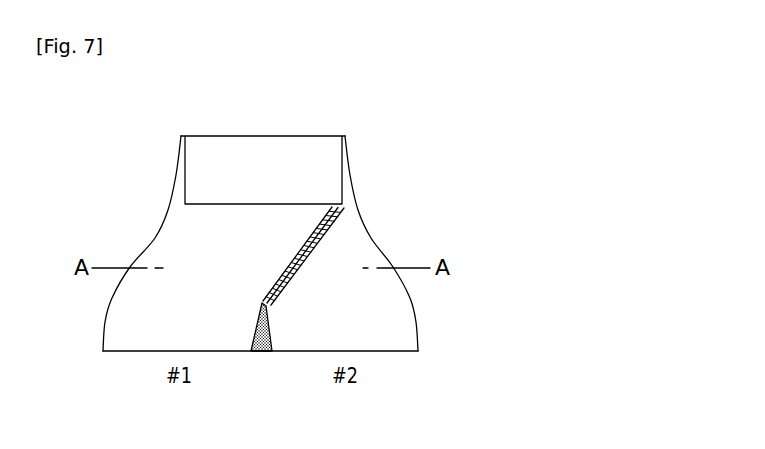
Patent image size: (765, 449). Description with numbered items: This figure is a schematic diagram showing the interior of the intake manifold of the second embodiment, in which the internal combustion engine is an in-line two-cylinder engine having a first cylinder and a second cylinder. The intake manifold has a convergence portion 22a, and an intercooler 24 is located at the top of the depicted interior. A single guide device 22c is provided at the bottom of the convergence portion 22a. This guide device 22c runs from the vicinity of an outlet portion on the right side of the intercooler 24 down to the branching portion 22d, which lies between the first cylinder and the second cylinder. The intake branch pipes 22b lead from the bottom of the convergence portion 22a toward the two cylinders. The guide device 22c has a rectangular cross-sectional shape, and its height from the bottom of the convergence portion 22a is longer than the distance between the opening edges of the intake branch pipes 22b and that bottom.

The convergence portion 22a is at (375, 241).
The intake branch pipes 22b is at (200, 337).
The guide device 22c is at (297, 270).
The branching portion 22d is at (264, 303).
The intercooler 24 is at (305, 136).